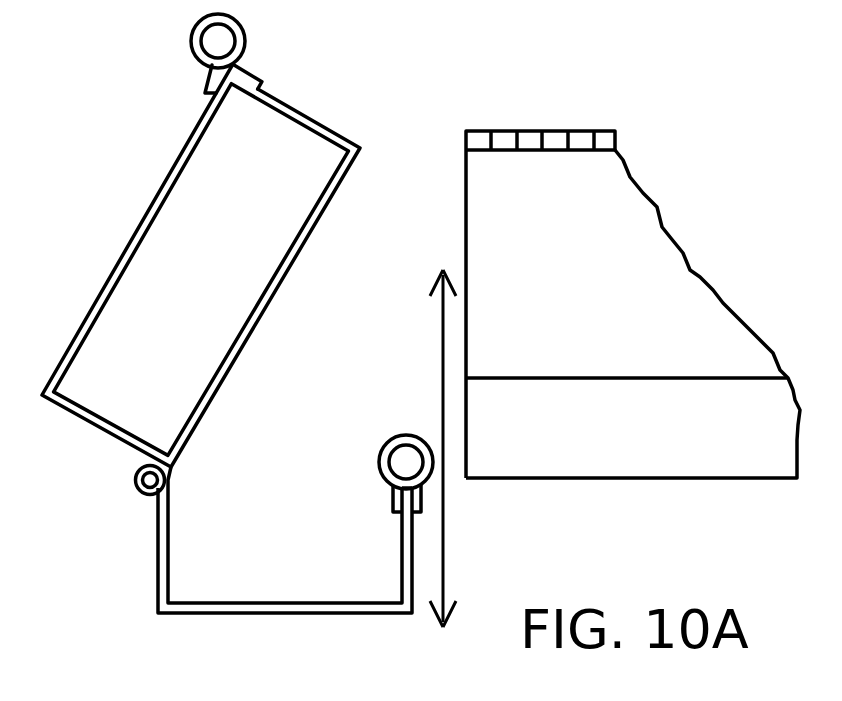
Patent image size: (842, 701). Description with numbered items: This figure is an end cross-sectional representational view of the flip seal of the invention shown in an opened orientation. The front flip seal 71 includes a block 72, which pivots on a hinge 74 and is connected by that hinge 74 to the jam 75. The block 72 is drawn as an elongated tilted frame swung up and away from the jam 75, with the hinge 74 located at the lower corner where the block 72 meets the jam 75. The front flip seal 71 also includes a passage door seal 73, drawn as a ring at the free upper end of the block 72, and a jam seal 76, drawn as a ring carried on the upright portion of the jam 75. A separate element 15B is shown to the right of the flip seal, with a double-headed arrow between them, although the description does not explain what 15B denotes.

The front flip seal 71 is at (95, 226).
The block 72 is at (90, 350).
The passage door seal 73 is at (245, 34).
The hinge 74 is at (142, 497).
The jam 75 is at (282, 614).
The jam seal 76 is at (380, 446).
The housing portion 15B is at (647, 238).